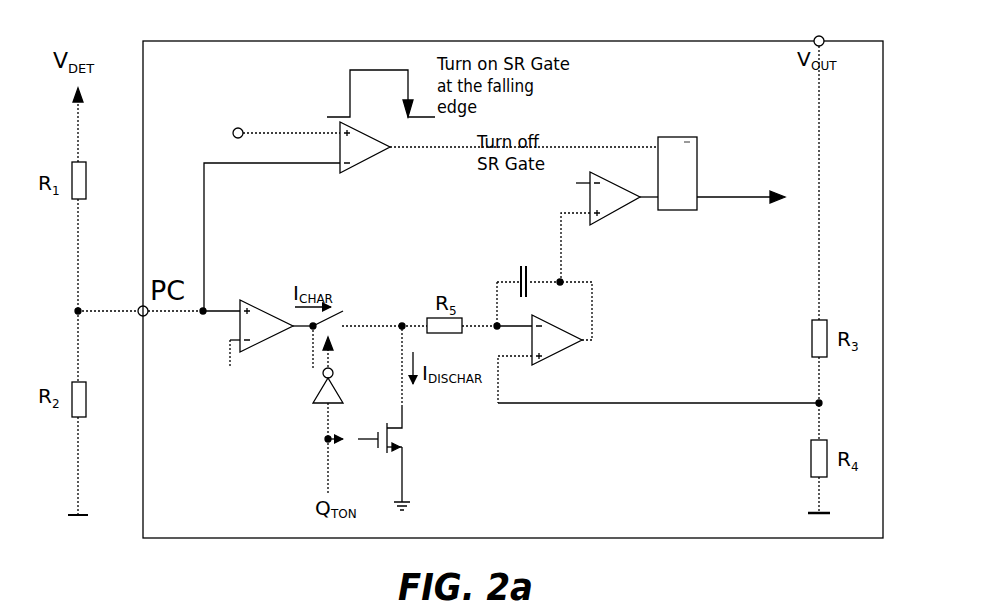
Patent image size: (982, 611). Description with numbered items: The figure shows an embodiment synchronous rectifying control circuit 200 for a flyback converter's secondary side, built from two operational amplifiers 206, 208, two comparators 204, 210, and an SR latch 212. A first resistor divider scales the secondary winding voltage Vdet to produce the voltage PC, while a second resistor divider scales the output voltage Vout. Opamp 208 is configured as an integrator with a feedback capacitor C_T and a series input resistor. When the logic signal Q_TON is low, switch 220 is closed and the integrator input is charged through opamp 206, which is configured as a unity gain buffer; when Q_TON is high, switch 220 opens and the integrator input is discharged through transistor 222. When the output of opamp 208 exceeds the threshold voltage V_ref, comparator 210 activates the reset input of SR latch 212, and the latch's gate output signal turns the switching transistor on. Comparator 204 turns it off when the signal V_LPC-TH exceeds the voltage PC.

The synchronous rectifying control circuit 200 is at (113, 32).
The comparator 204 is at (350, 124).
The operational amplifier 206 is at (254, 303).
The operational amplifier 208 is at (547, 318).
The comparator 210 is at (598, 186).
The SR latch 212 is at (667, 137).
The switch 220 is at (347, 321).
The transistor 222 is at (403, 432).